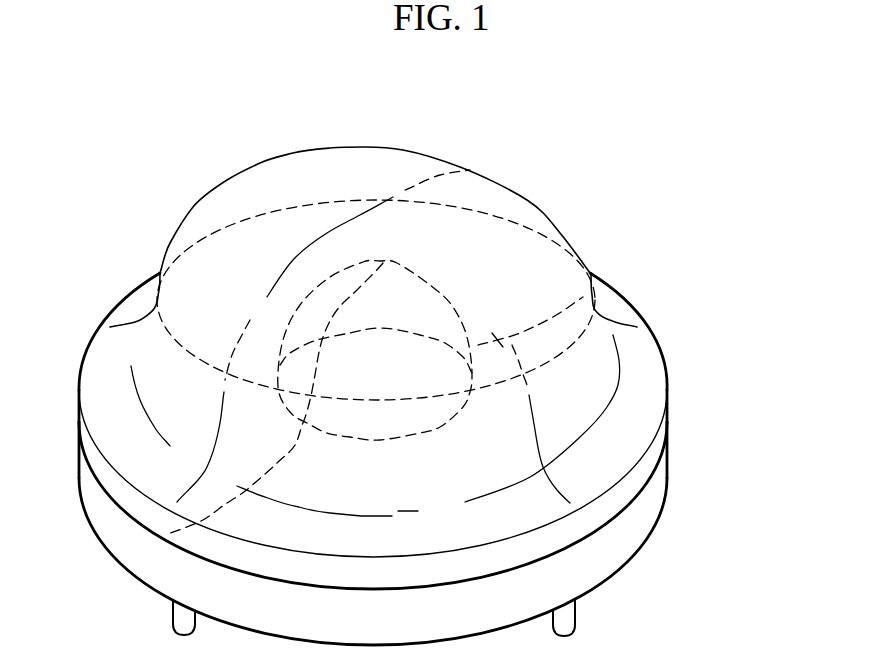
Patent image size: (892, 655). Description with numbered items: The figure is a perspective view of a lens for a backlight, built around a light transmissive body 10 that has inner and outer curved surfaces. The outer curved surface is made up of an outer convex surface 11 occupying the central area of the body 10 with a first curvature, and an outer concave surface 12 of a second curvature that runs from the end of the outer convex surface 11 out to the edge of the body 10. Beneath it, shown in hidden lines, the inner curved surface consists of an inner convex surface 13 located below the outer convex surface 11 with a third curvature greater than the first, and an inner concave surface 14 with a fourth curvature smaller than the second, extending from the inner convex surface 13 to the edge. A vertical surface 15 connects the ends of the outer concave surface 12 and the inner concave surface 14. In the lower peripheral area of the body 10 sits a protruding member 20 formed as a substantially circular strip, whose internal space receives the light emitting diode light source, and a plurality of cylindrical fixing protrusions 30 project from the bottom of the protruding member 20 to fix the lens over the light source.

The light transmissive body 10 is at (762, 125).
The outer convex surface 11 is at (428, 168).
The outer concave surface 12 is at (600, 310).
The inner convex surface 13 is at (433, 293).
The inner concave surface 14 is at (524, 338).
The vertical surface 15 is at (658, 446).
The protruding member 20 is at (644, 514).
The fixing protrusions 30 is at (577, 613).